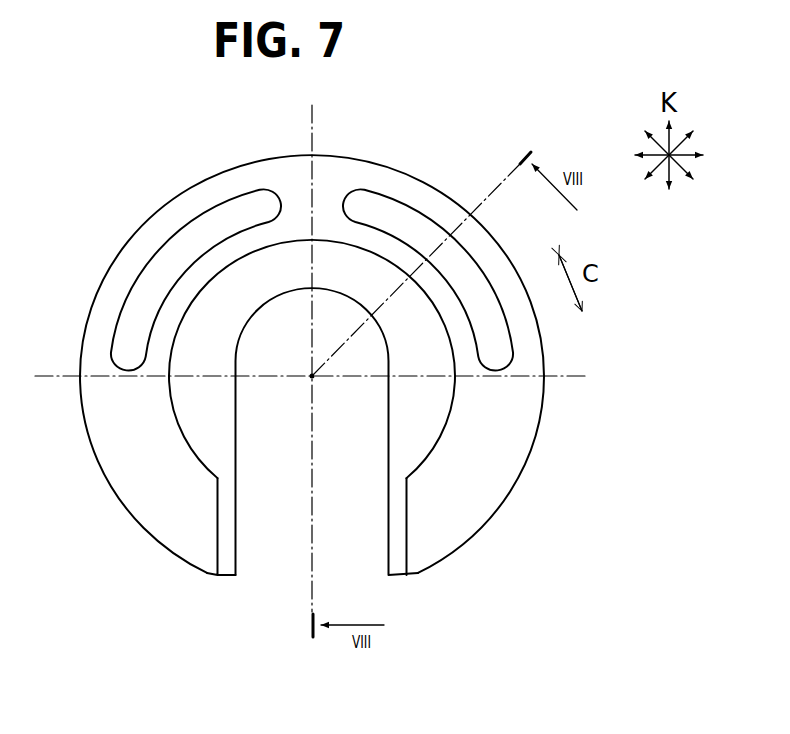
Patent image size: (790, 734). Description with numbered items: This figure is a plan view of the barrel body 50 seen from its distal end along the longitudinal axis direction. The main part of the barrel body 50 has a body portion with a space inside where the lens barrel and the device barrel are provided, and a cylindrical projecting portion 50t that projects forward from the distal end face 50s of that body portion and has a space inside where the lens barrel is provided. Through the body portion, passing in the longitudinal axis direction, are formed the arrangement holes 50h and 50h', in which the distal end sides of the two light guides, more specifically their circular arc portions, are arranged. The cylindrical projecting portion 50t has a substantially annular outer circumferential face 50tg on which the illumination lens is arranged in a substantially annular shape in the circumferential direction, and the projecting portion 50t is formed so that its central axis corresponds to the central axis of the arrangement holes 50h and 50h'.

The barrel body 50 is at (519, 478).
The distal end face 50s is at (488, 428).
The cylindrical projecting portion 50t is at (206, 410).
The outer circumferential face 50tg is at (365, 245).
The arrangement hole 50h is at (483, 279).
The arrangement hole 50h' is at (196, 234).